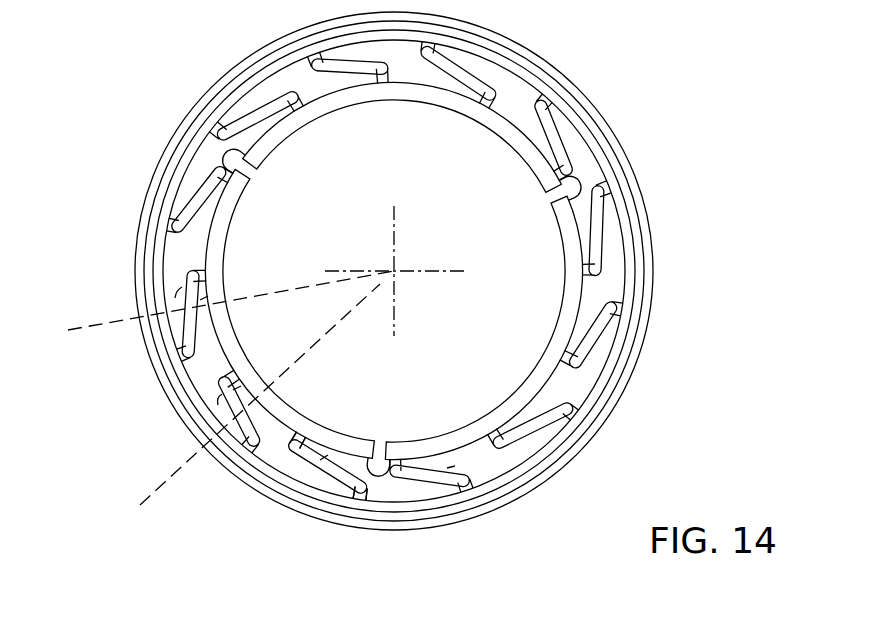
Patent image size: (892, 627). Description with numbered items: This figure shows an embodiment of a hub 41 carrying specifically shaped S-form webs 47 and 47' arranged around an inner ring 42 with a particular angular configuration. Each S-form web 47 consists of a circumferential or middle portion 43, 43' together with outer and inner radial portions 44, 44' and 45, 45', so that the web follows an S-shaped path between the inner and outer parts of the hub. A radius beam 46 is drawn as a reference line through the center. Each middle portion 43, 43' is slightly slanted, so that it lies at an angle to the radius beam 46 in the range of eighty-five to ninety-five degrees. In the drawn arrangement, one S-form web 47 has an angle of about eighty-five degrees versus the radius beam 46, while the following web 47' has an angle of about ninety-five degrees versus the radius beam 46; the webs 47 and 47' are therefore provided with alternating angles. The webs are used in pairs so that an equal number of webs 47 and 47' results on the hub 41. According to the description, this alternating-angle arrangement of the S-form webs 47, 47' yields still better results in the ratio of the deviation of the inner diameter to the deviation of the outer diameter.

The hub 41 is at (592, 132).
The inner ring 42 is at (526, 148).
The middle portion 43 is at (448, 483).
The middle portion 43' is at (452, 365).
The outer radial portion 44 is at (356, 525).
The outer radial portion 44' is at (214, 460).
The inner radial portion 45 is at (272, 496).
The inner radial portion 45' is at (146, 325).
The radius beam 46 is at (226, 401).
The S-form web 47 is at (282, 337).
The S-form web 47' is at (349, 388).